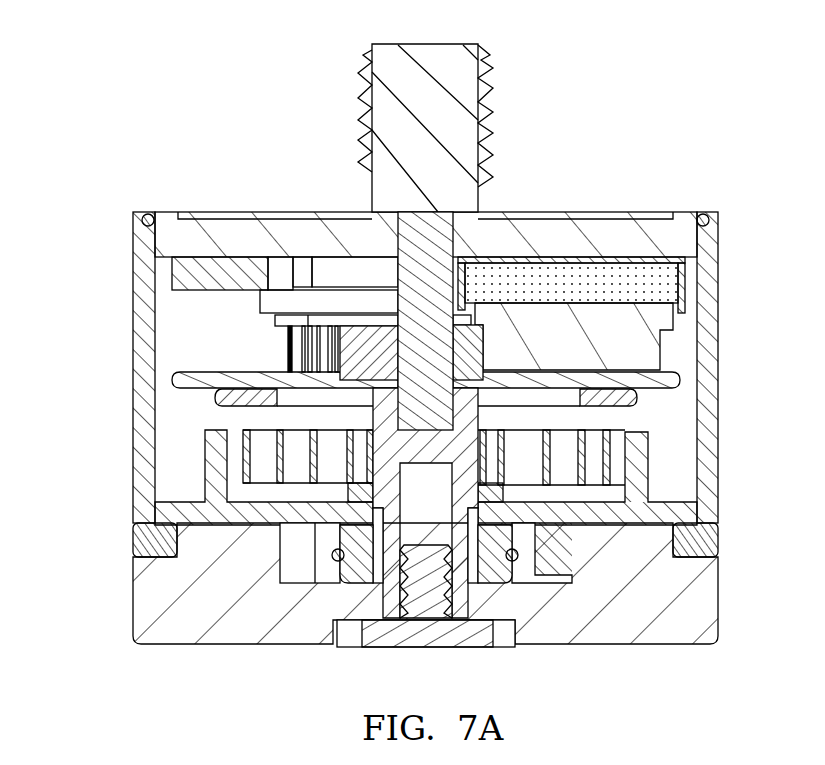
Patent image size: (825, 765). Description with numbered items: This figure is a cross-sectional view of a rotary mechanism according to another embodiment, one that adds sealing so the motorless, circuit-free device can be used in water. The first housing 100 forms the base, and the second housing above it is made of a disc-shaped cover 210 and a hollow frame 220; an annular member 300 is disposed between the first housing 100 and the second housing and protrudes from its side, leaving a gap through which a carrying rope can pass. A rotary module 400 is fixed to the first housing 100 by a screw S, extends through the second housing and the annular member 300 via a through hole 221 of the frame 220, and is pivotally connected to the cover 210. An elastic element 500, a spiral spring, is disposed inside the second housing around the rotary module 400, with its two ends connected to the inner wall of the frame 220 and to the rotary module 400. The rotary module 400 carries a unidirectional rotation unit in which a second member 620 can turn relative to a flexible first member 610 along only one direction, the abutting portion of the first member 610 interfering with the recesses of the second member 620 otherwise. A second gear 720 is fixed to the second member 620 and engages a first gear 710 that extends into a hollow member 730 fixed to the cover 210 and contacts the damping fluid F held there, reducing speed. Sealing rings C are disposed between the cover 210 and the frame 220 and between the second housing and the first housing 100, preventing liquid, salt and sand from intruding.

The first housing 100 is at (142, 608).
The cover 210 is at (243, 235).
The frame 220 is at (142, 317).
The through hole 221 is at (356, 568).
The annular member 300 is at (133, 543).
The rotary module 400 is at (459, 605).
The elastic element 500 is at (240, 462).
The first member 610 is at (208, 397).
The second member 620 is at (190, 378).
The first gear 710 is at (292, 348).
The second gear 720 is at (487, 336).
The hollow member 730 is at (683, 300).
The sealing ring C is at (148, 214).
The damping fluid F is at (663, 270).
The screw S is at (392, 636).